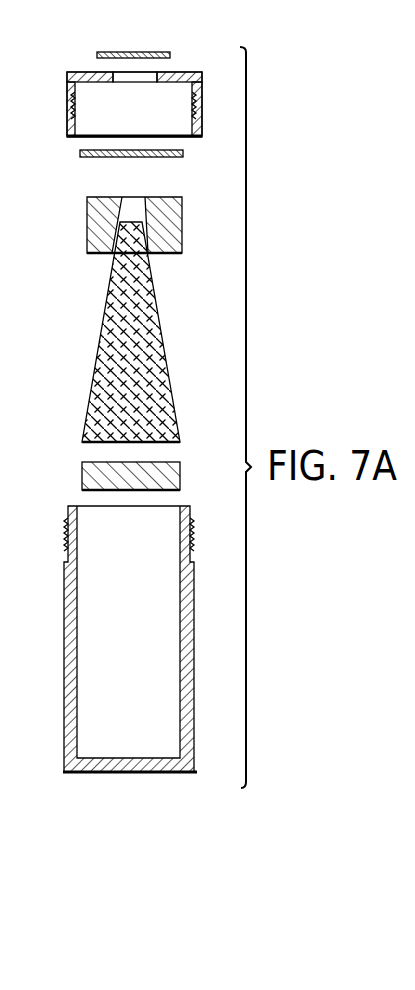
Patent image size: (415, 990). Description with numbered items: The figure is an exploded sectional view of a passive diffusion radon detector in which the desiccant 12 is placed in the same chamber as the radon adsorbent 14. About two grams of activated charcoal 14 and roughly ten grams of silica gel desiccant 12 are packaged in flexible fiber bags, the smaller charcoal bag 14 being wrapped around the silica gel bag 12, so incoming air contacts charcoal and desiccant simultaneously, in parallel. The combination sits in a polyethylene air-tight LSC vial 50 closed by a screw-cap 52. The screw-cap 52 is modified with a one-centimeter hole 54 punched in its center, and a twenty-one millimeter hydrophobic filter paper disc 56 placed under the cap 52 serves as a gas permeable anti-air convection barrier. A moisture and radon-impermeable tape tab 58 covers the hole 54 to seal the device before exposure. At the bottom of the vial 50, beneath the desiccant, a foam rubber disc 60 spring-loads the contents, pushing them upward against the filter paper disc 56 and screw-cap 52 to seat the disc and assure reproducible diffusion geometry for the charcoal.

The desiccant 12 is at (102, 332).
The radon adsorbent 14 is at (88, 213).
The LSC vial 50 is at (70, 600).
The screw-cap 52 is at (68, 72).
The hole 54 is at (142, 72).
The filter paper disc 56 is at (80, 153).
The tape tab 58 is at (96, 51).
The foam rubber disc 60 is at (82, 476).